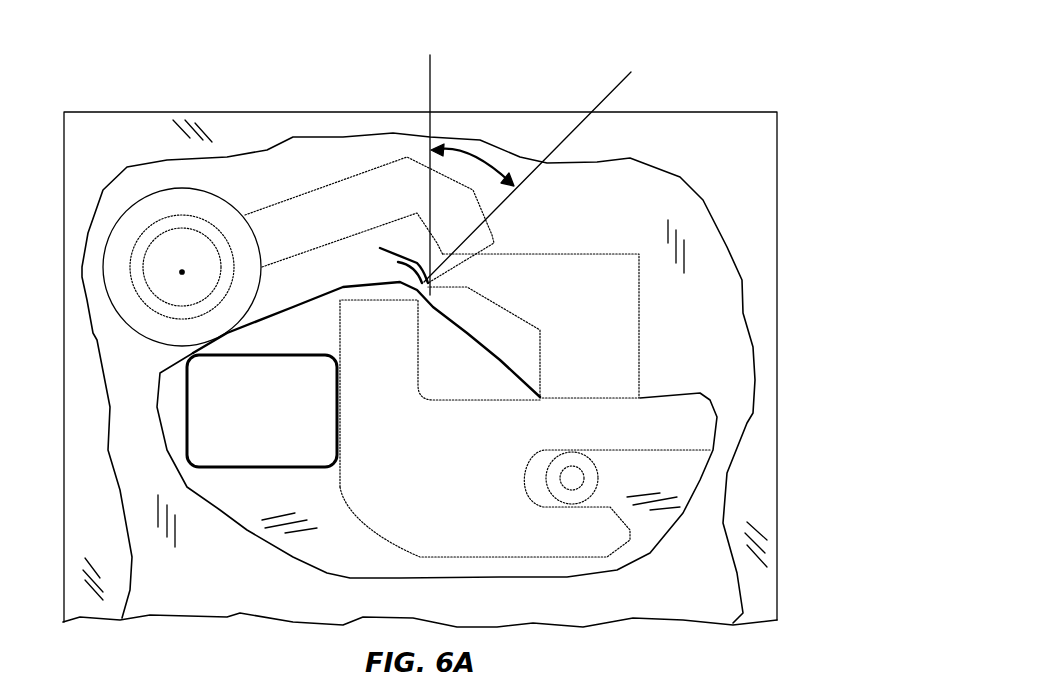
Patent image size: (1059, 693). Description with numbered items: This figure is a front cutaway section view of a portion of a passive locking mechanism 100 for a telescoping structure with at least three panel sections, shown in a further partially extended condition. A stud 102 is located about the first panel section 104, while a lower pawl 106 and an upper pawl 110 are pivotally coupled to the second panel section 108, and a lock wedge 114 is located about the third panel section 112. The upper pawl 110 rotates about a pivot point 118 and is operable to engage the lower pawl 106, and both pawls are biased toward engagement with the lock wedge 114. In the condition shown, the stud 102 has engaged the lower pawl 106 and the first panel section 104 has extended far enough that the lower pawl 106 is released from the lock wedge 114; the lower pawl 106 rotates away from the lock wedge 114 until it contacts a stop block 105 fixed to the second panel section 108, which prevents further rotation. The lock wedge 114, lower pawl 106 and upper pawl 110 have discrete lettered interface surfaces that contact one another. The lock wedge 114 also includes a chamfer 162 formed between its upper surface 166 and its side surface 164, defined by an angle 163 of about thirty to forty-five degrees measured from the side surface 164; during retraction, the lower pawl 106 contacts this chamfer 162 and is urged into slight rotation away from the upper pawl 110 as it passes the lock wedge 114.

The passive locking mechanism 100 is at (767, 92).
The stud 102 is at (563, 483).
The first panel section 104 is at (112, 147).
The stop block 105 is at (300, 362).
The lower pawl 106 is at (373, 503).
The second panel section 108 is at (259, 504).
The upper pawl 110 is at (297, 217).
The third panel section 112 is at (632, 209).
The lock wedge 114 is at (628, 337).
The pivot point 118 is at (182, 274).
The chamfer 162 is at (428, 283).
The angle 163 is at (470, 157).
The side surface 164 is at (433, 283).
The upper surface 166 is at (540, 254).